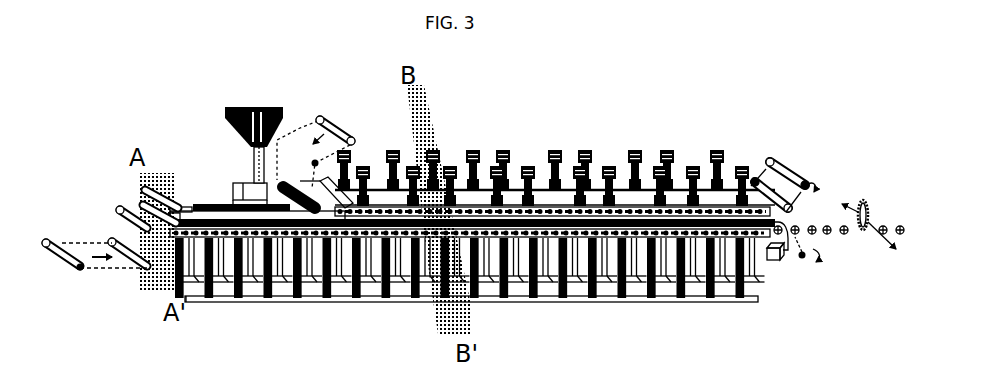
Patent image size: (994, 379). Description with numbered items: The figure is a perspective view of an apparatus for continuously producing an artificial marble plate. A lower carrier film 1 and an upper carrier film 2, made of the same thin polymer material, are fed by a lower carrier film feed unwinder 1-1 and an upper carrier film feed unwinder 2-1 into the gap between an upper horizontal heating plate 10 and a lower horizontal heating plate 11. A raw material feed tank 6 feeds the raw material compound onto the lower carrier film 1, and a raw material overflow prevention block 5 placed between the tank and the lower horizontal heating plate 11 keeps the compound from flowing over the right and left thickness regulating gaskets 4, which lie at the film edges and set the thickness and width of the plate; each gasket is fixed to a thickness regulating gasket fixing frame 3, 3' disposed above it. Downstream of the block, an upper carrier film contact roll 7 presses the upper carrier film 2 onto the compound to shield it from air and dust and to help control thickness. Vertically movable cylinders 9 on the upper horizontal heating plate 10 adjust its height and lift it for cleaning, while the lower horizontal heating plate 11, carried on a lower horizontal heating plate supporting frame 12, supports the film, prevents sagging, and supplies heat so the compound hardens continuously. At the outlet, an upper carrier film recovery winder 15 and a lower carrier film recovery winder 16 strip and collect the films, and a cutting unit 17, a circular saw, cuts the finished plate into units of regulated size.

The lower carrier film 1 is at (112, 268).
The lower carrier film feed unwinder 1-1 is at (60, 250).
The upper carrier film 2 is at (309, 118).
The upper carrier film feed unwinder 2-1 is at (350, 114).
The thickness regulating gasket fixing frame 3 is at (160, 184).
The thickness regulating gasket fixing frame 3' is at (775, 269).
The thickness regulating gasket 4 is at (204, 204).
The raw material overflow prevention block 5 is at (236, 183).
The raw material feed tank 6 is at (259, 106).
The upper carrier film contact roll 7 is at (293, 180).
The vertically movable cylinder 9 is at (393, 156).
The upper horizontal heating plate 10 is at (347, 282).
The lower horizontal heating plate 11 is at (160, 265).
The lower horizontal heating plate supporting frame 12 is at (200, 284).
The upper carrier film recovery winder 15 is at (790, 173).
The lower carrier film recovery winder 16 is at (800, 260).
The cutting unit 17 is at (864, 200).